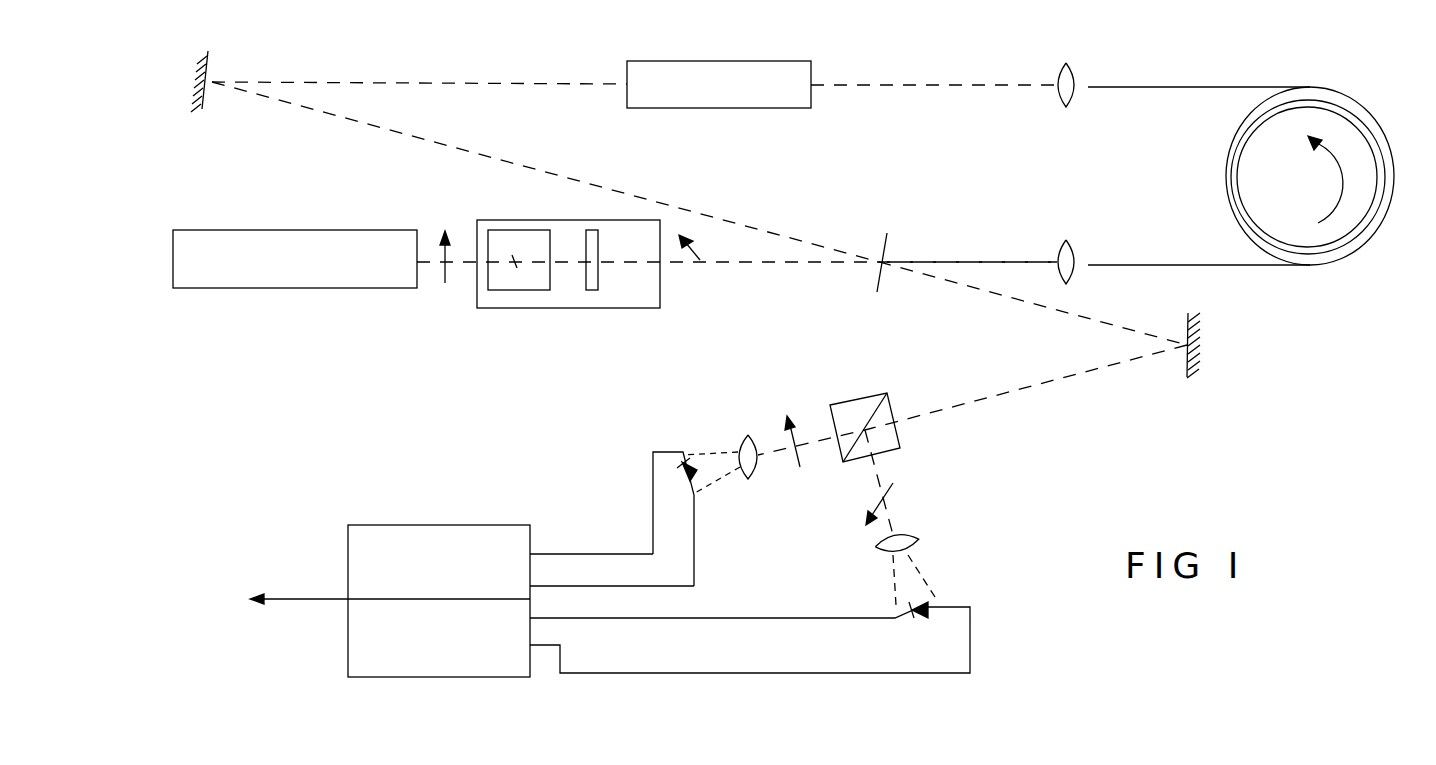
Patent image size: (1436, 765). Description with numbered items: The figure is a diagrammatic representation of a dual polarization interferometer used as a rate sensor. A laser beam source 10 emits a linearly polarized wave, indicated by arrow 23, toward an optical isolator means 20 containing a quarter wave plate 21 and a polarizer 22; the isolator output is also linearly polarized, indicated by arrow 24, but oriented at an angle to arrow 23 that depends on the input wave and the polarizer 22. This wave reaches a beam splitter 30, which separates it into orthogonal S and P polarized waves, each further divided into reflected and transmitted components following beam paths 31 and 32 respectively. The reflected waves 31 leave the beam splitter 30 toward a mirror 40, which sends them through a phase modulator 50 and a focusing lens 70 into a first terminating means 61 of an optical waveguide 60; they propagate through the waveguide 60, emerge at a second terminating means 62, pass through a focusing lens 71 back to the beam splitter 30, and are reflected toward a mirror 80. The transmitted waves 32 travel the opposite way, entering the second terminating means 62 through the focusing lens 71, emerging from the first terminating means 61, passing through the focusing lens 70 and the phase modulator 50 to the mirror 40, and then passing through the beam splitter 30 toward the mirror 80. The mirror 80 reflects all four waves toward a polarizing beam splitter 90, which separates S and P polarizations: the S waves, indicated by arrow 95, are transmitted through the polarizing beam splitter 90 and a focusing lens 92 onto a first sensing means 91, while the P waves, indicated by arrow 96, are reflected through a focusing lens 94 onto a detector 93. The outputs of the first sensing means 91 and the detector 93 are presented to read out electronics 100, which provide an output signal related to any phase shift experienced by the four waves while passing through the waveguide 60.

The laser beam source 10 is at (300, 230).
The optical isolator means 20 is at (538, 308).
The quarter wave plate 21 is at (552, 290).
The polarizer 22 is at (598, 290).
The arrow 23 is at (452, 242).
The arrow 24 is at (699, 261).
The beam splitter 30 is at (887, 238).
The reflected wave beam path 31 is at (665, 204).
The transmitted wave beam path 32 is at (973, 262).
The mirror 40 is at (203, 108).
The phase modulator 50 is at (705, 60).
The optical waveguide 60 is at (1378, 118).
The first terminating means 61 is at (1088, 87).
The second terminating means 62 is at (1090, 265).
The focusing lens 70 is at (1061, 96).
The focusing lens 71 is at (1068, 240).
The mirror 80 is at (1186, 325).
The polarizing beam splitter 90 is at (850, 392).
The first sensing means 91 is at (680, 503).
The focusing lens 92 is at (745, 436).
The detector 93 is at (945, 643).
The focusing lens 94 is at (910, 536).
The arrow 95 is at (791, 415).
The arrow 96 is at (902, 487).
The read out electronics 100 is at (495, 525).